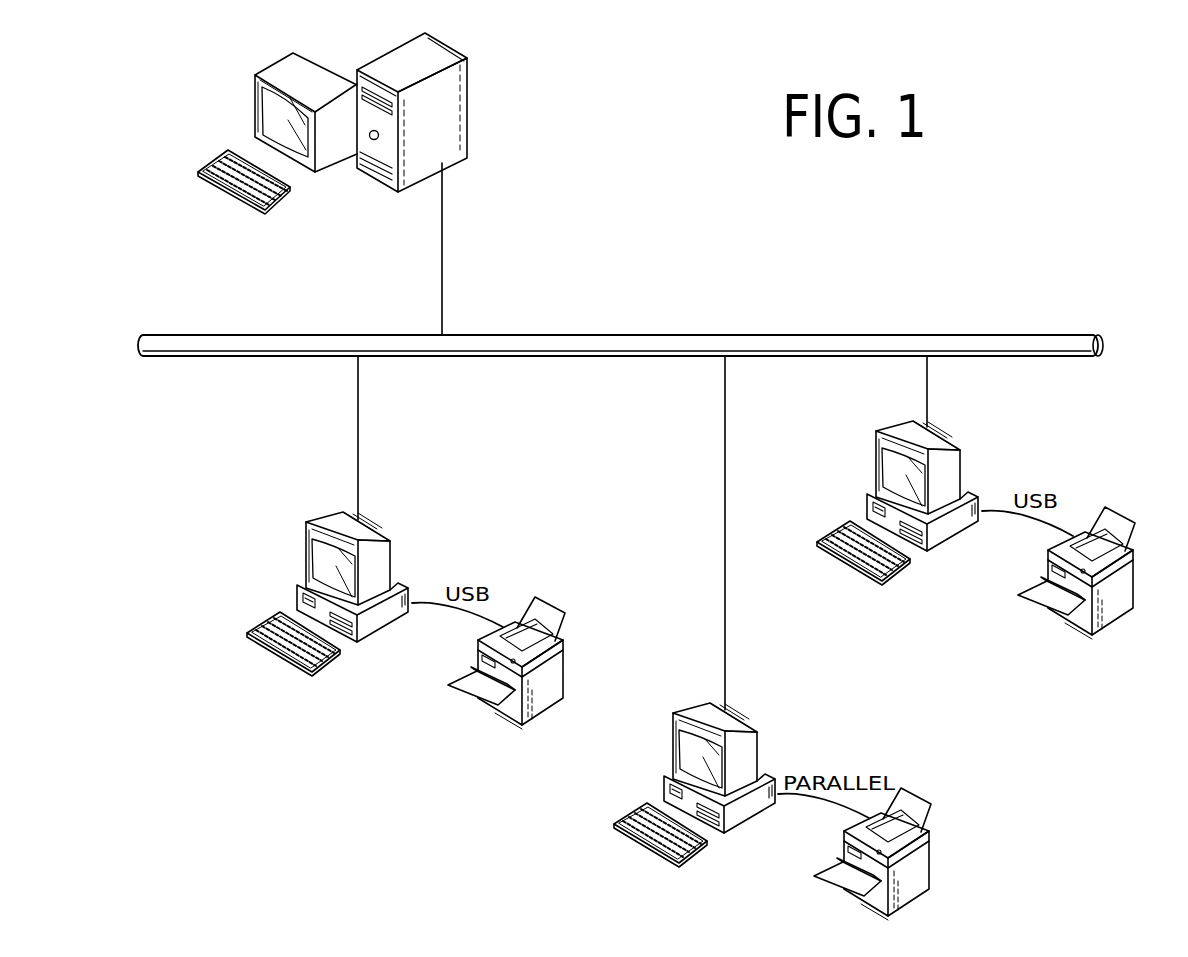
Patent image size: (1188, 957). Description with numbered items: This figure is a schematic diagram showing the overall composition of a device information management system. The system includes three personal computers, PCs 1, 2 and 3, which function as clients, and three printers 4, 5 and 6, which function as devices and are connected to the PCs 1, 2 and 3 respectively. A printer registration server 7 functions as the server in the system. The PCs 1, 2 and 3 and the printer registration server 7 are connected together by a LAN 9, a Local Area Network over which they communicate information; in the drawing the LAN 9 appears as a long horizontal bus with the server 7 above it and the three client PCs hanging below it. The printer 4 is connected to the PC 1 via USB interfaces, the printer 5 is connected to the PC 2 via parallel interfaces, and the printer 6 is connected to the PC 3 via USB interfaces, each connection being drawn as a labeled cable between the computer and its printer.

The PC 1 is at (387, 539).
The PC 2 is at (752, 730).
The PC 3 is at (957, 446).
The printer 4 is at (562, 634).
The printer 5 is at (928, 824).
The printer 6 is at (1128, 541).
The printer registration server 7 is at (470, 74).
The LAN 9 is at (612, 335).